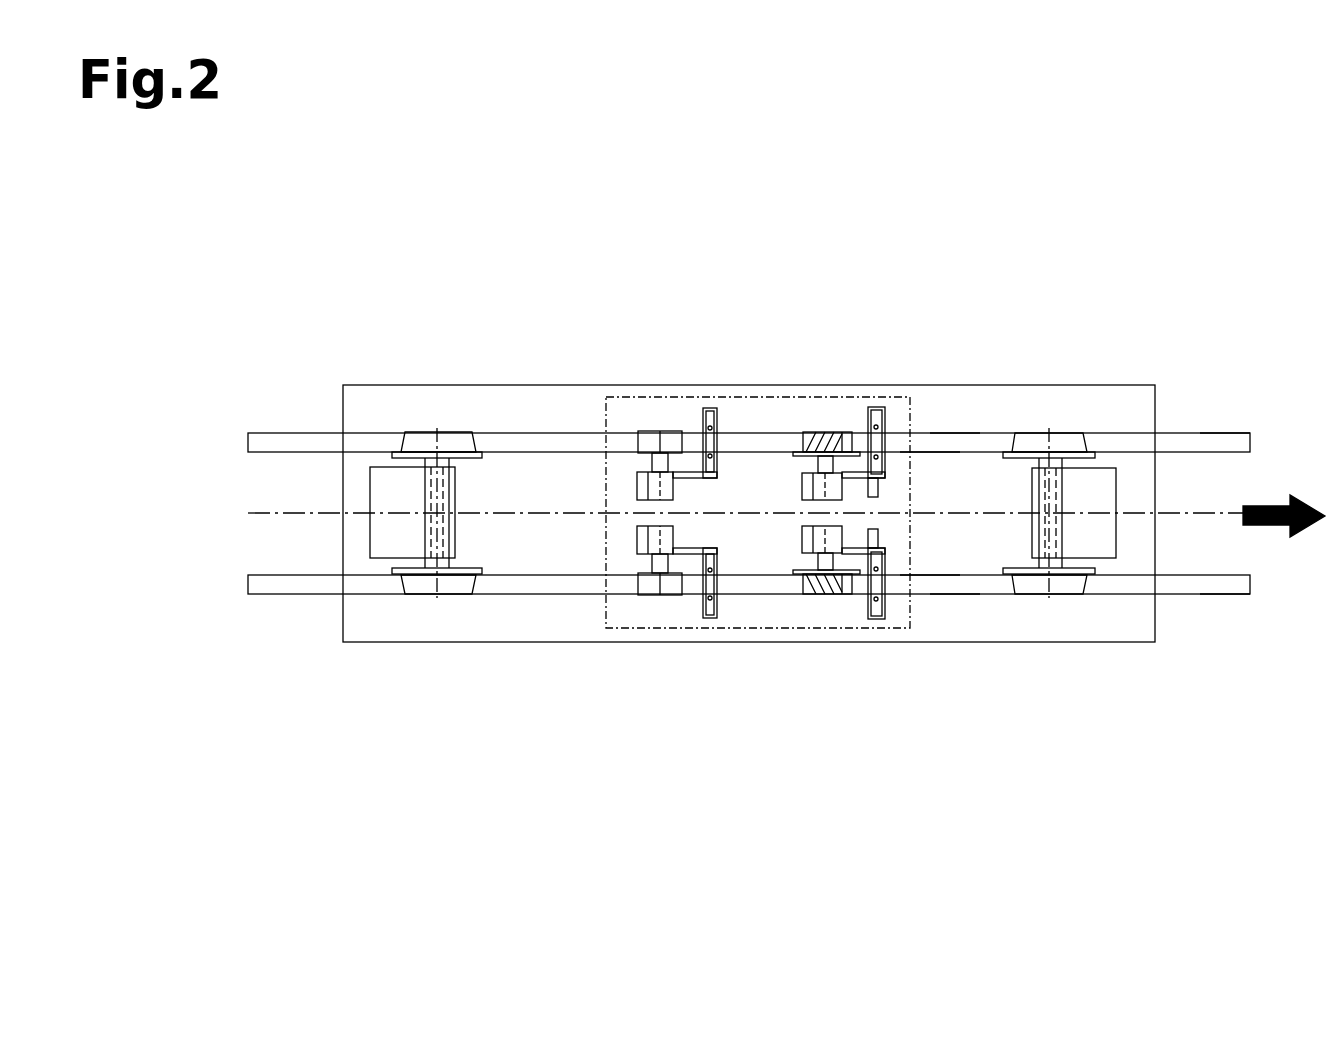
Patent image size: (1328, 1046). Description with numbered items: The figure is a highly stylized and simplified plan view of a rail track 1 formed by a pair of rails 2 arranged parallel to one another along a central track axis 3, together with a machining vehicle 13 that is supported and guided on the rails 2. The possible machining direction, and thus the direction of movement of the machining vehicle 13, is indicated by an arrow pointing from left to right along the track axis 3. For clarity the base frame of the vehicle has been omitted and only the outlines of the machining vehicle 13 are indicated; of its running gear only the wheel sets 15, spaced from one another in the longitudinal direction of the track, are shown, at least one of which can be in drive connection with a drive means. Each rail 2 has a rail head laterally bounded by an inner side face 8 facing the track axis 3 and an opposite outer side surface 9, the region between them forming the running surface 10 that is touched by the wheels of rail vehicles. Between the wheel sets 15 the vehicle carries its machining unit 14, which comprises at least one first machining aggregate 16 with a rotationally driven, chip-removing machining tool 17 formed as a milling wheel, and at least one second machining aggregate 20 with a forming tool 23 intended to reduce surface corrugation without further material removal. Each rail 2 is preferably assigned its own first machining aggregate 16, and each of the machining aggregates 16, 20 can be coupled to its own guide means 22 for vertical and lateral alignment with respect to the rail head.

The rail track 1 is at (1094, 248).
The rail 2 is at (273, 442).
The track axis 3 is at (1190, 505).
The inner side face 8 is at (947, 450).
The outer side surface 9 is at (955, 433).
The running surface 10 is at (1218, 436).
The machining vehicle 13 is at (352, 377).
The machining unit 14 is at (720, 392).
The wheel set 15 is at (422, 440).
The first machining aggregate 16 is at (802, 413).
The machining tool 17 is at (827, 423).
The second machining aggregate 20 is at (635, 420).
The guide means 22 is at (632, 480).
The forming tool 23 is at (672, 442).